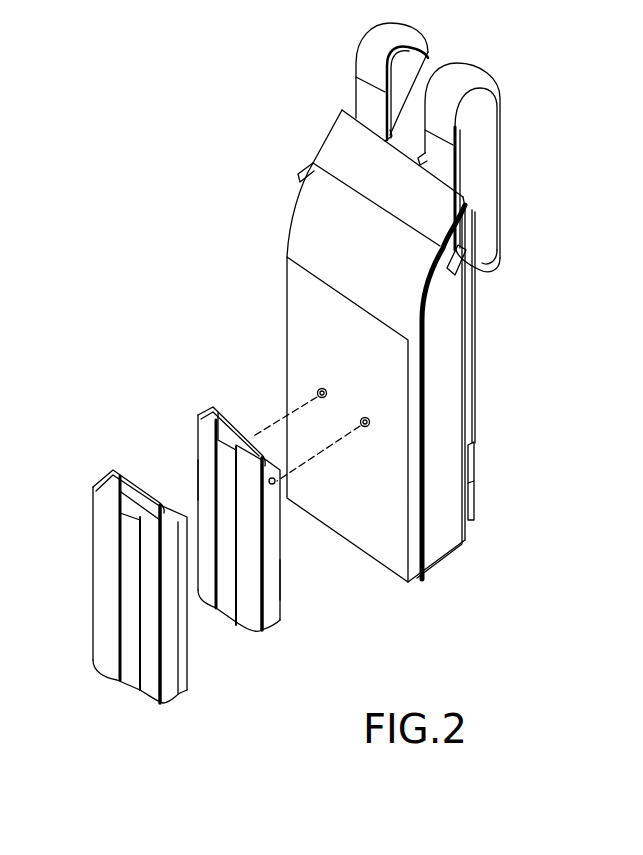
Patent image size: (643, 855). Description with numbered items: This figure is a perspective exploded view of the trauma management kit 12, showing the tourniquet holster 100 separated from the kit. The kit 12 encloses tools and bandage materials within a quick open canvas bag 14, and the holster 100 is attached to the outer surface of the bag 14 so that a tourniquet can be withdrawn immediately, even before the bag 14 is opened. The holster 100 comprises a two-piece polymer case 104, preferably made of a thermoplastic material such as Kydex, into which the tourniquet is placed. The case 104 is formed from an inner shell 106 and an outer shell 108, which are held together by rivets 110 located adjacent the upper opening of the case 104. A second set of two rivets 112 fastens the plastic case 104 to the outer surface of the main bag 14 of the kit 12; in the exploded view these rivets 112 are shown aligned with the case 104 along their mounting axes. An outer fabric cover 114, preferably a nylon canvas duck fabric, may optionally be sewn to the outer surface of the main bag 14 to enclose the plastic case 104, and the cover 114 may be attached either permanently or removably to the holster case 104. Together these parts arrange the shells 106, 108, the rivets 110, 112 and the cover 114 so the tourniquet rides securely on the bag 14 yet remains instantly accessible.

The trauma management kit 12 is at (485, 524).
The quick open canvas bag 14 is at (450, 425).
The tourniquet holster 100 is at (268, 336).
The two-piece polymer case 104 is at (294, 572).
The inner shell 106 is at (234, 428).
The outer shell 108 is at (197, 479).
The rivets 110 is at (274, 484).
The rivets 112 is at (364, 418).
The outer fabric cover 114 is at (105, 588).